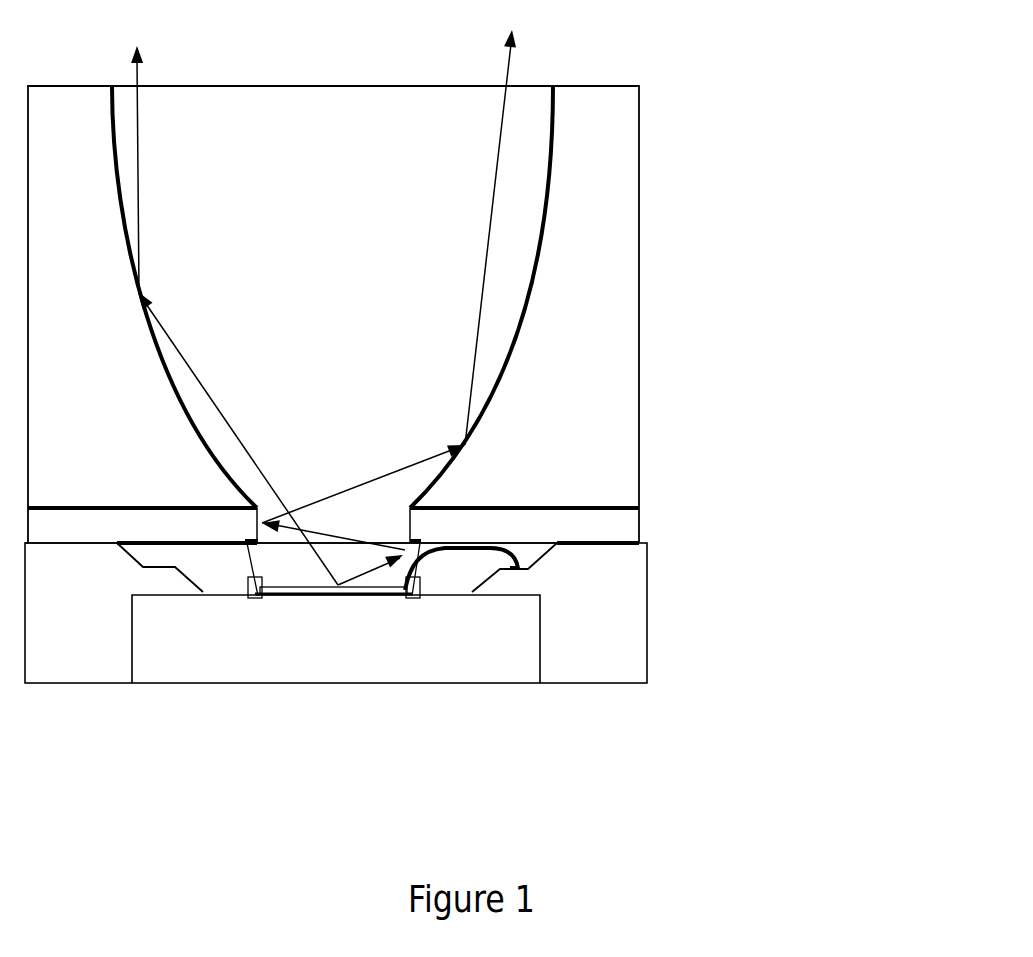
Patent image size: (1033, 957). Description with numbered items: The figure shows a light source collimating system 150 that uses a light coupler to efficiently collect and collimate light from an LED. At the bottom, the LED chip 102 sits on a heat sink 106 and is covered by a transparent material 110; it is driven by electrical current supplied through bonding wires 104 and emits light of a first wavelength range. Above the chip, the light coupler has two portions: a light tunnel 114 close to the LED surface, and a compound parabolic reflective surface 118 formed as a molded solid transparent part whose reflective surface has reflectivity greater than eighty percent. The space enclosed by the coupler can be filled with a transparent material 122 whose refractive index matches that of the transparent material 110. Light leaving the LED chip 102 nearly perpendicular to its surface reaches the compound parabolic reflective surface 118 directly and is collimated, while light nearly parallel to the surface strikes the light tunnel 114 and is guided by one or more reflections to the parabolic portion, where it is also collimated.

The light source collimating system 150 is at (742, 122).
The transparent material 122 is at (438, 258).
The compound parabolic reflective surface 118 is at (635, 302).
The light tunnel 114 is at (620, 530).
The heat sink 106 is at (317, 640).
The LED chip 102 is at (378, 592).
The transparent material 110 is at (283, 560).
The bonding wires 104 is at (437, 553).